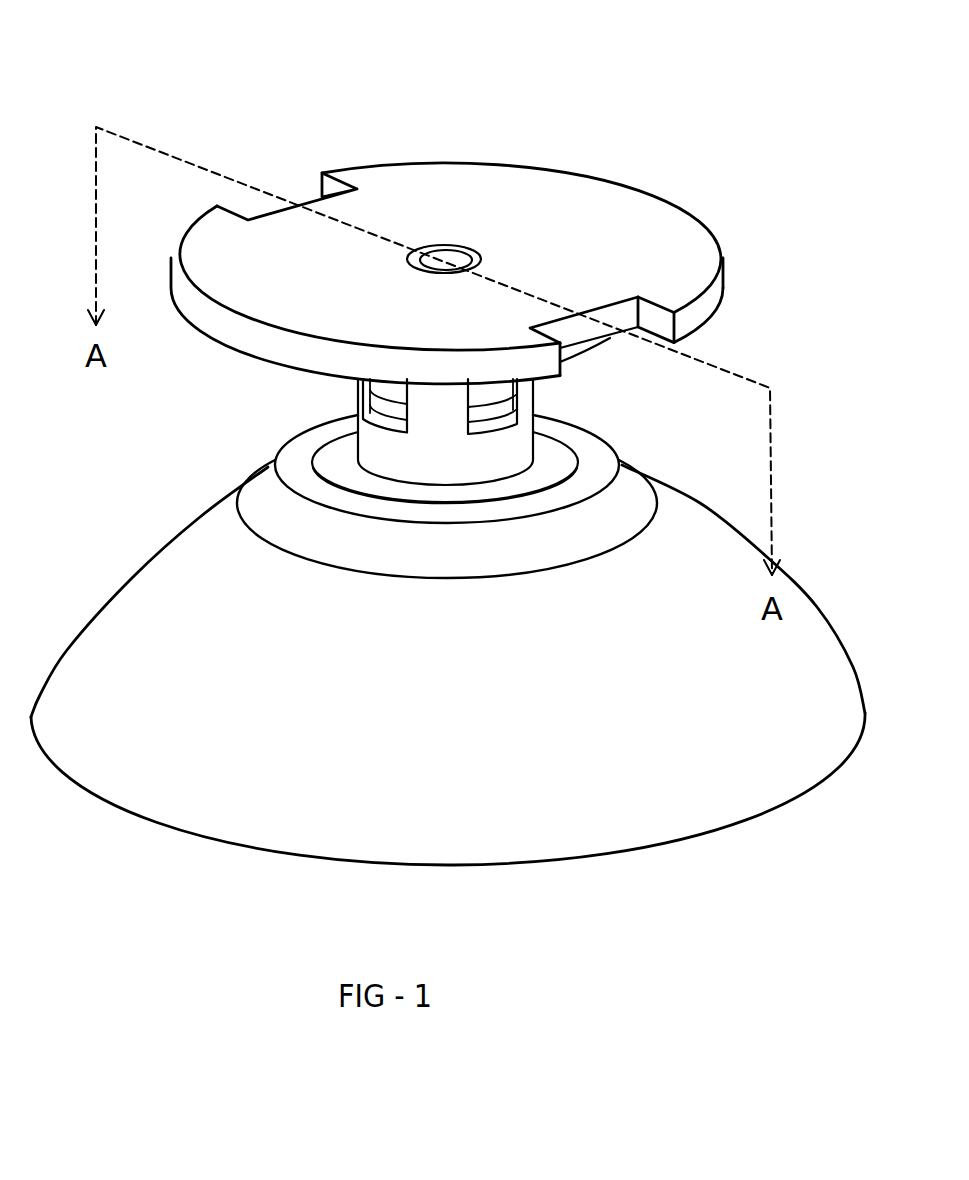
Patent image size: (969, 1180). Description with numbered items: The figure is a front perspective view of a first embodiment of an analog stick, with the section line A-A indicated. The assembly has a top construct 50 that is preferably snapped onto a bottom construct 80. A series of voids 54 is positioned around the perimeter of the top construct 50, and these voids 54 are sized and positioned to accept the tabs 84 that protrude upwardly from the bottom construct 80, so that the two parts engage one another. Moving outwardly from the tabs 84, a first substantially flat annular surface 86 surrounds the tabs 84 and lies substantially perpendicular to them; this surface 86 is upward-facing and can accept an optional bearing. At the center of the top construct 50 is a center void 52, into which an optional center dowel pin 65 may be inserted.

The top construct 50 is at (495, 173).
The center void 52 is at (457, 248).
The center dowel pin 65 is at (447, 263).
The voids 54 is at (358, 384).
The tabs 84 is at (490, 398).
The first substantially flat annular surface 86 is at (332, 462).
The bottom construct 80 is at (633, 800).